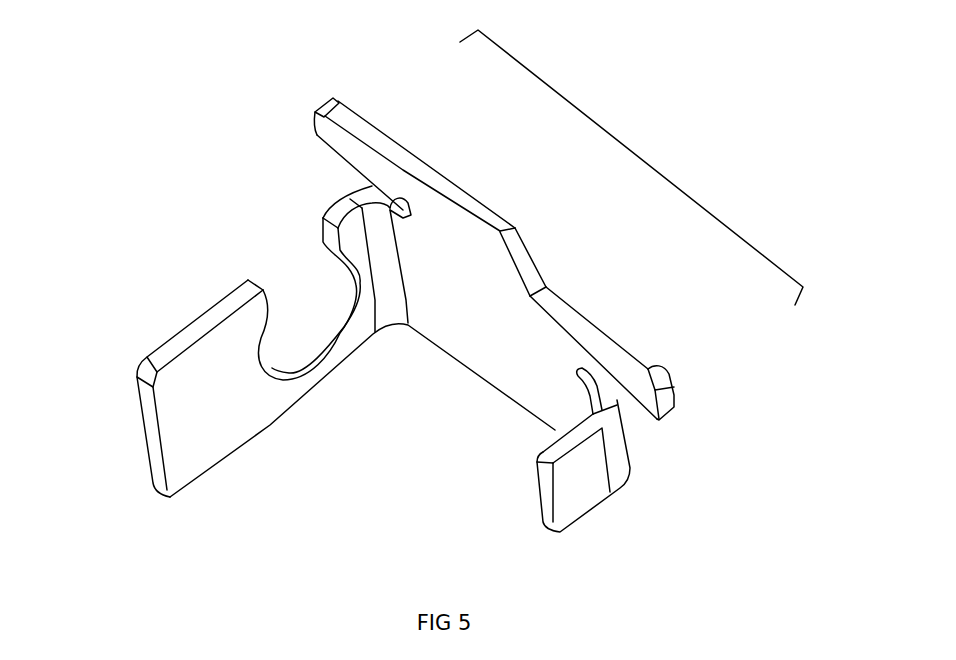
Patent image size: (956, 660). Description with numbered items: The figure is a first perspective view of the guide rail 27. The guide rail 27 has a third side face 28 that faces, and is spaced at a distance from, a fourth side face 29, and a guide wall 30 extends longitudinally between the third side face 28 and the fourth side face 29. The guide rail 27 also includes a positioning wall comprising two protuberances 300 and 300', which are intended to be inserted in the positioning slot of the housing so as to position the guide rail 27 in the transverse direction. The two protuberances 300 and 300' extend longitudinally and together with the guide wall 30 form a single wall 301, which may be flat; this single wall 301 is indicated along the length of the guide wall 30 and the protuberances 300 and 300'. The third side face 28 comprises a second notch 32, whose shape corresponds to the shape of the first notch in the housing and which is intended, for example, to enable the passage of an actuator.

The guide rail 27 is at (390, 480).
The third side face 28 is at (156, 352).
The fourth side face 29 is at (573, 463).
The guide wall 30 is at (448, 275).
The second notch 32 is at (336, 306).
The protuberance 300 is at (705, 358).
The protuberance 300' is at (397, 110).
The single wall 301 is at (641, 157).